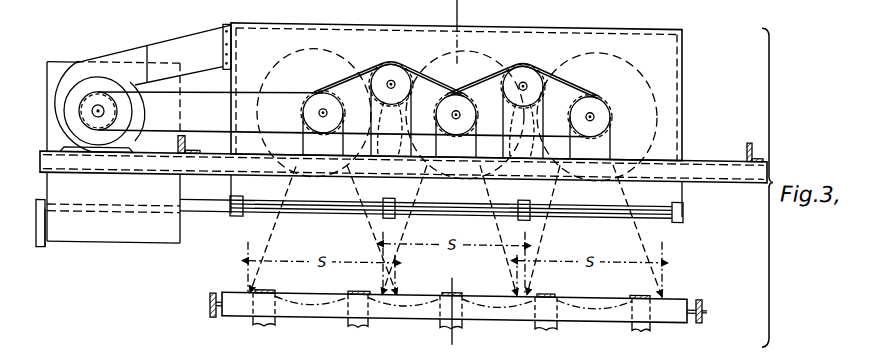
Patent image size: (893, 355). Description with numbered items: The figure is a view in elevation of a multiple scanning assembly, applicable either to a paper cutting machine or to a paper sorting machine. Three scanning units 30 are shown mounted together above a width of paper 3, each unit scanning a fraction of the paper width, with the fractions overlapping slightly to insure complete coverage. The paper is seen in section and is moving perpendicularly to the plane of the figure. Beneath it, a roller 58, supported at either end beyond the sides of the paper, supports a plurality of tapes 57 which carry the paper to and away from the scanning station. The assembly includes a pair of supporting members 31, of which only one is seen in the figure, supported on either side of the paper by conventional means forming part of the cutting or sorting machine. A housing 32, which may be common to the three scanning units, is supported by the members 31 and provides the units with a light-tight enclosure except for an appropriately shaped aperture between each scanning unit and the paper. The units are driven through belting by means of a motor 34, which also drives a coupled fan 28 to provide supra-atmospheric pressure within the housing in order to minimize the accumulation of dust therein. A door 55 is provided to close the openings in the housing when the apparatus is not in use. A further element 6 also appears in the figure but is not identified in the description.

The width of paper 3 is at (662, 283).
The section line 6- 6 is at (459, 5).
The fan 28 is at (67, 67).
The scanning units 30 is at (638, 56).
The supporting members 31 is at (750, 171).
The housing 32 is at (685, 67).
The motor 34 is at (101, 76).
The door 55 is at (653, 200).
The tapes 57 is at (268, 319).
The roller 58 is at (227, 319).